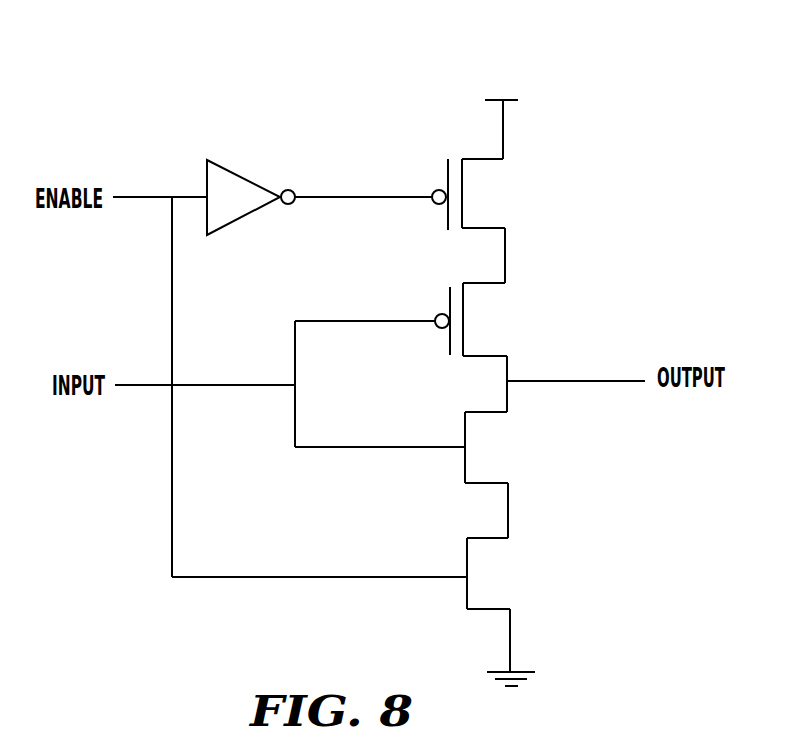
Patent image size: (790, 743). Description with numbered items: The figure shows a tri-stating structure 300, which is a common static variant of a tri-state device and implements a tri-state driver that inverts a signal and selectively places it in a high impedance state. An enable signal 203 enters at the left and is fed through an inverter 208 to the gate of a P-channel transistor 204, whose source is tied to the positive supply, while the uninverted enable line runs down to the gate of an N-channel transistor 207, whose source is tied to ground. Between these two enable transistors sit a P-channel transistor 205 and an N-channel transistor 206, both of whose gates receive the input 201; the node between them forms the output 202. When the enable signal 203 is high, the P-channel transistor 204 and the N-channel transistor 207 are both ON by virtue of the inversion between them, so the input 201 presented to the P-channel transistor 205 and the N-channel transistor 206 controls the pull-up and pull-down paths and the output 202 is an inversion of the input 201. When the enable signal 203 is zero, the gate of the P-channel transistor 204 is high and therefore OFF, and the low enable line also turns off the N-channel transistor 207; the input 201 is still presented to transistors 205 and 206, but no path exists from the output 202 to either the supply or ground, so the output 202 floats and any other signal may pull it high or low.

The tri-stating structure 300 is at (222, 107).
The input 201 is at (137, 382).
The output 202 is at (602, 378).
The enable signal 203 is at (135, 196).
The P-channel transistor 204 is at (445, 175).
The P-channel transistor 205 is at (447, 300).
The N-channel transistor 206 is at (463, 428).
The N-channel transistor 207 is at (465, 553).
The inverter 208 is at (260, 182).